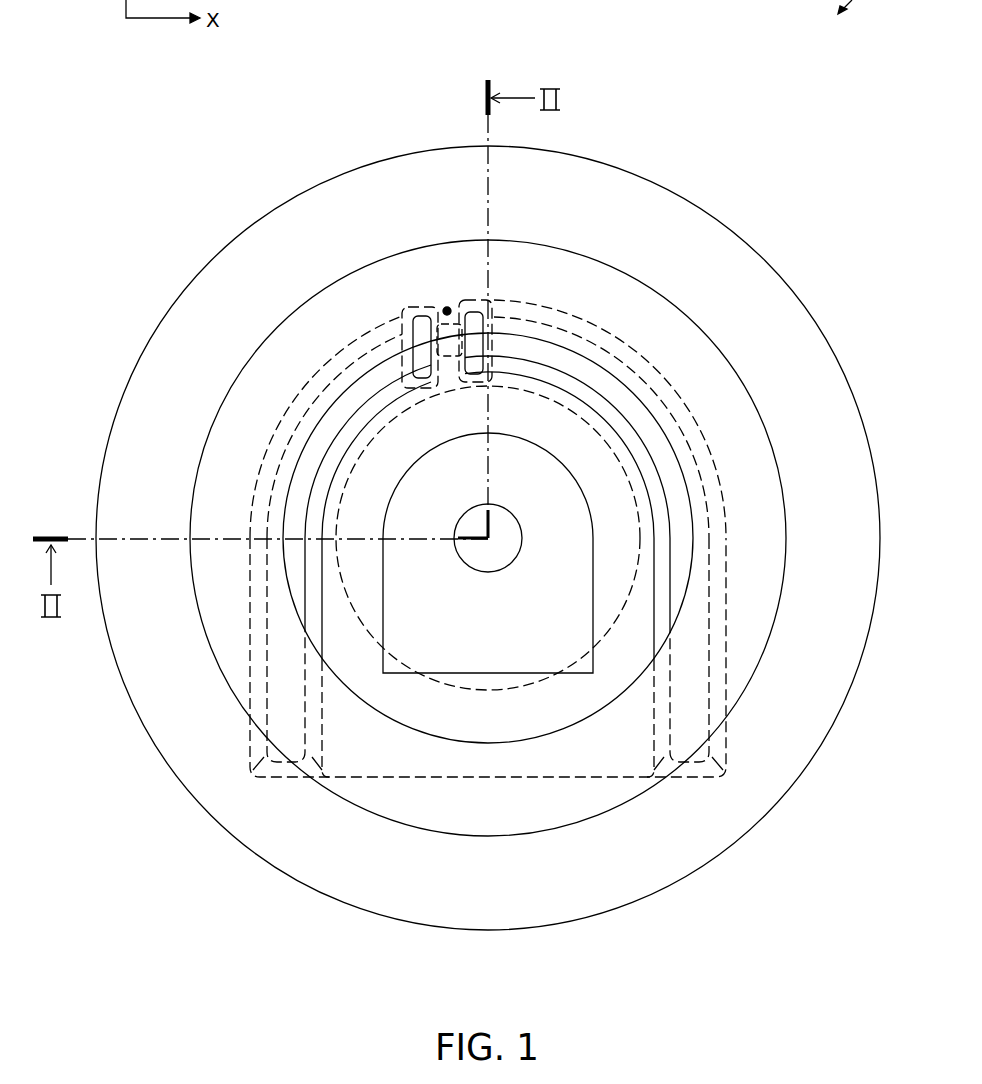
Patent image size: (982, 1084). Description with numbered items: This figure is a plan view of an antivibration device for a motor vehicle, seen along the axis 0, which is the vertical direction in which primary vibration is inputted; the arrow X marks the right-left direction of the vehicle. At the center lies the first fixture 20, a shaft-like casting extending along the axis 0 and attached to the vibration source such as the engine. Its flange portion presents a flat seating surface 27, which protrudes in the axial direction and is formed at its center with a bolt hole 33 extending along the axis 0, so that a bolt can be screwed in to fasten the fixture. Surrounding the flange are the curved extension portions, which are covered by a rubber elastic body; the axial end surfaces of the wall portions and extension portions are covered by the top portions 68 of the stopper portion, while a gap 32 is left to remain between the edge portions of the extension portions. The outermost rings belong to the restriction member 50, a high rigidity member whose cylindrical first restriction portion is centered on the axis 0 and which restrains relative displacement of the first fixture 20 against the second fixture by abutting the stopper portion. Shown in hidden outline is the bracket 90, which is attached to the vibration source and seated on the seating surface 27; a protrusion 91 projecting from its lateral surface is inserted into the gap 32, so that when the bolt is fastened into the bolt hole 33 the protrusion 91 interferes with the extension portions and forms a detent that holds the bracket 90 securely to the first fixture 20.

The axis 0 is at (486, 544).
The first fixture 20 is at (513, 482).
The seating surface 27 is at (533, 655).
The gap 32 is at (445, 309).
The bolt hole 33 is at (505, 552).
The restriction member 50 is at (735, 810).
The top portions 68 is at (620, 394).
The bracket 90 is at (432, 684).
The protrusion 91 is at (378, 358).